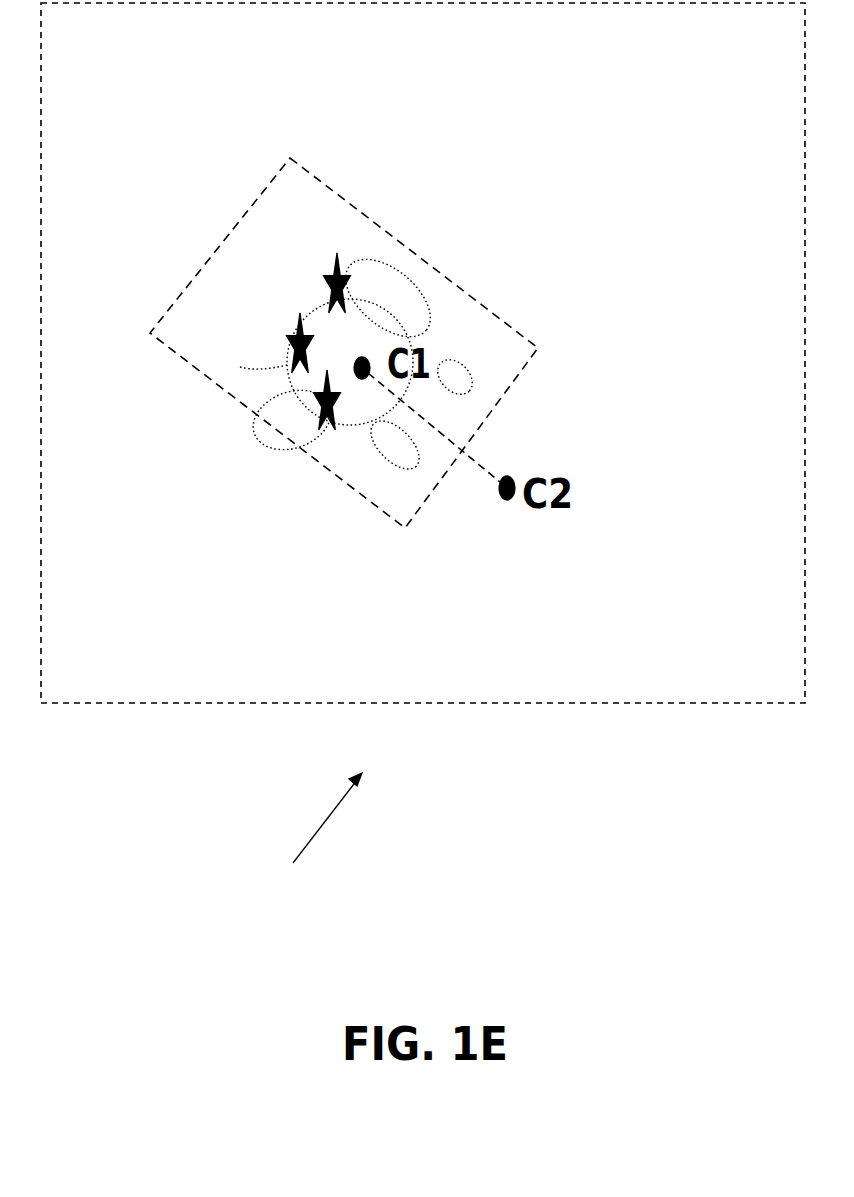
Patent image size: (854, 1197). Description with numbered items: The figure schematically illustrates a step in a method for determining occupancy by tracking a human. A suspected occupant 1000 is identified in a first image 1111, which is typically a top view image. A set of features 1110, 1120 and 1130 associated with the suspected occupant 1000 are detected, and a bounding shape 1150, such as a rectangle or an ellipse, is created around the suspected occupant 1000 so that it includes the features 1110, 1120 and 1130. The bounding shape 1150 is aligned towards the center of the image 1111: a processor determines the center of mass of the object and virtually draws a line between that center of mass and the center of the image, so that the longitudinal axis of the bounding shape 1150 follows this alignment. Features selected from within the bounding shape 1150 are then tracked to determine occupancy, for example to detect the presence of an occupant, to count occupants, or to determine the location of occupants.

The suspected occupant 1000 is at (240, 367).
The feature 1110 is at (292, 352).
The feature 1120 is at (347, 292).
The feature 1130 is at (332, 408).
The bounding shape 1150 is at (313, 183).
The first image 1111 is at (293, 838).